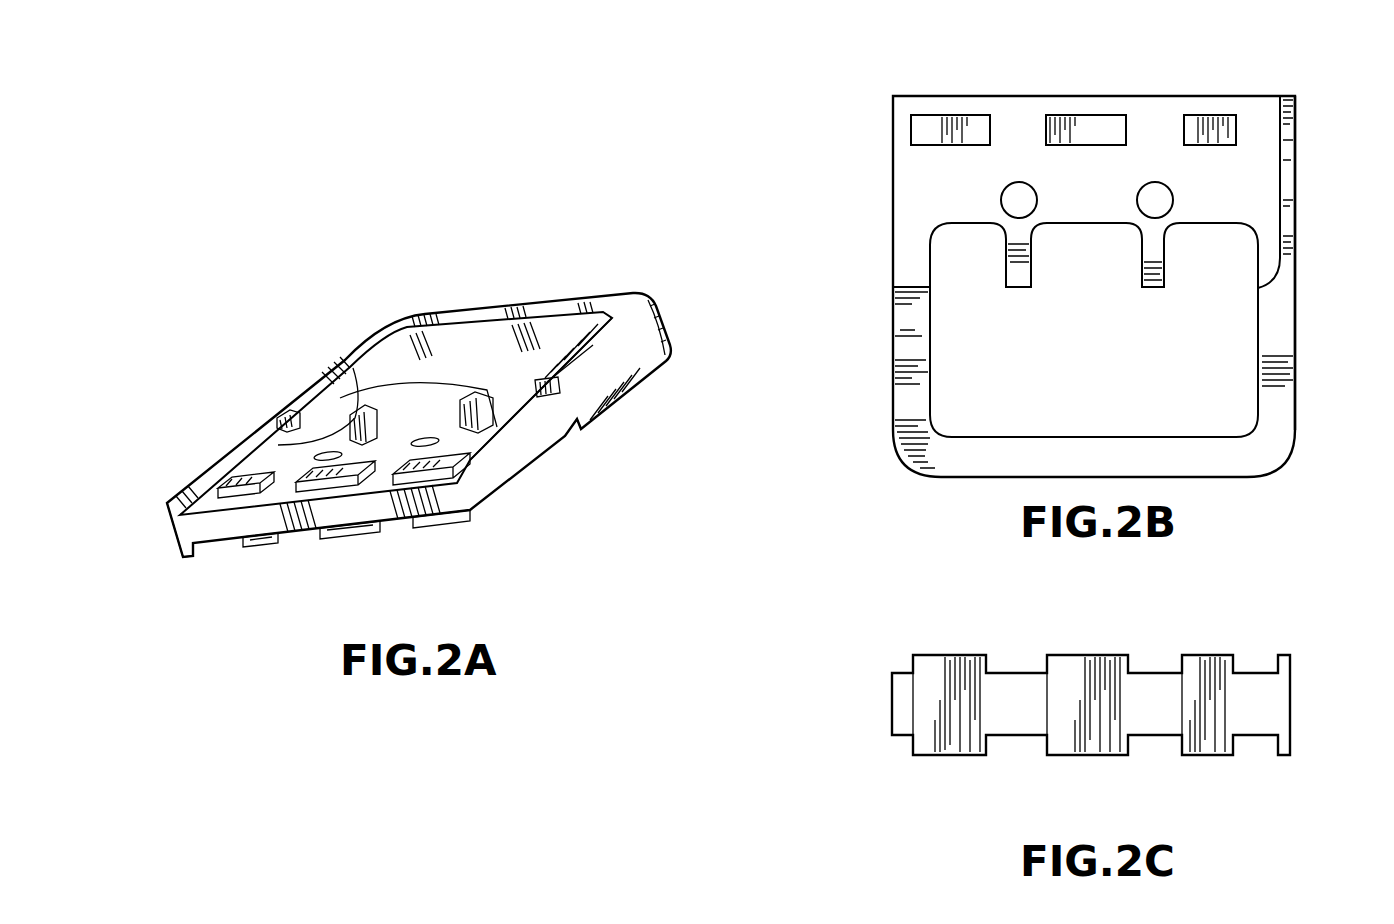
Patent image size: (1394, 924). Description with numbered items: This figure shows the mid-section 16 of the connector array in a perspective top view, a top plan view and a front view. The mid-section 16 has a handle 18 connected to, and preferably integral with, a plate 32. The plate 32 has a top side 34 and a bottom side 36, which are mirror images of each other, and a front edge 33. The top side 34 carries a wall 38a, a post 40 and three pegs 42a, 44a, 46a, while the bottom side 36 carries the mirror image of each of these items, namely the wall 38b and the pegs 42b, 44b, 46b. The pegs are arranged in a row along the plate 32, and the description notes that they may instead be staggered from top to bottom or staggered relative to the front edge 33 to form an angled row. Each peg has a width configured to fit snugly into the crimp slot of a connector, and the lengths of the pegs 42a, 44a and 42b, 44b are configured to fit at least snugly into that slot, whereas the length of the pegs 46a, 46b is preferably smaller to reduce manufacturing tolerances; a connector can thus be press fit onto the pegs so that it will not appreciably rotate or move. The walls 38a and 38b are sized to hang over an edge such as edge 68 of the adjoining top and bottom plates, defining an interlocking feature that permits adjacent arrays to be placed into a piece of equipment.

In FIG. 2A, the mid-section 16 is at (543, 282).
In FIG. 2A, the handle 18 is at (590, 303).
In FIG. 2A, the plate 32 is at (298, 536).
In FIG. 2A, the front edge 33 is at (385, 508).
In FIG. 2A, the top side 34 is at (290, 468).
In FIG. 2A, the bottom side 36 is at (497, 483).
In FIG. 2A, the wall 38a is at (168, 503).
In FIG. 2B, the wall 38a is at (1290, 180).
In FIG. 2C, the wall 38a is at (1278, 740).
In FIG. 2A, the wall 38b is at (195, 556).
In FIG. 2C, the wall 38b is at (1290, 668).
In FIG. 2A, the post 40 is at (350, 400).
In FIG. 2A, the peg 42a is at (238, 474).
In FIG. 2B, the peg 42a is at (927, 130).
In FIG. 2C, the peg 42a is at (1180, 740).
In FIG. 2A, the peg 42b is at (254, 541).
In FIG. 2C, the peg 42b is at (1233, 662).
In FIG. 2A, the peg 44a is at (380, 432).
In FIG. 2B, the peg 44a is at (1078, 125).
In FIG. 2C, the peg 44a is at (1045, 740).
In FIG. 2A, the peg 44b is at (350, 533).
In FIG. 2C, the peg 44b is at (1128, 662).
In FIG. 2A, the peg 46a is at (450, 455).
In FIG. 2B, the peg 46a is at (1208, 128).
In FIG. 2C, the peg 46a is at (907, 745).
In FIG. 2A, the peg 46b is at (475, 507).
In FIG. 2C, the peg 46b is at (985, 662).
In FIG. 2A, the edge 68 is at (514, 460).